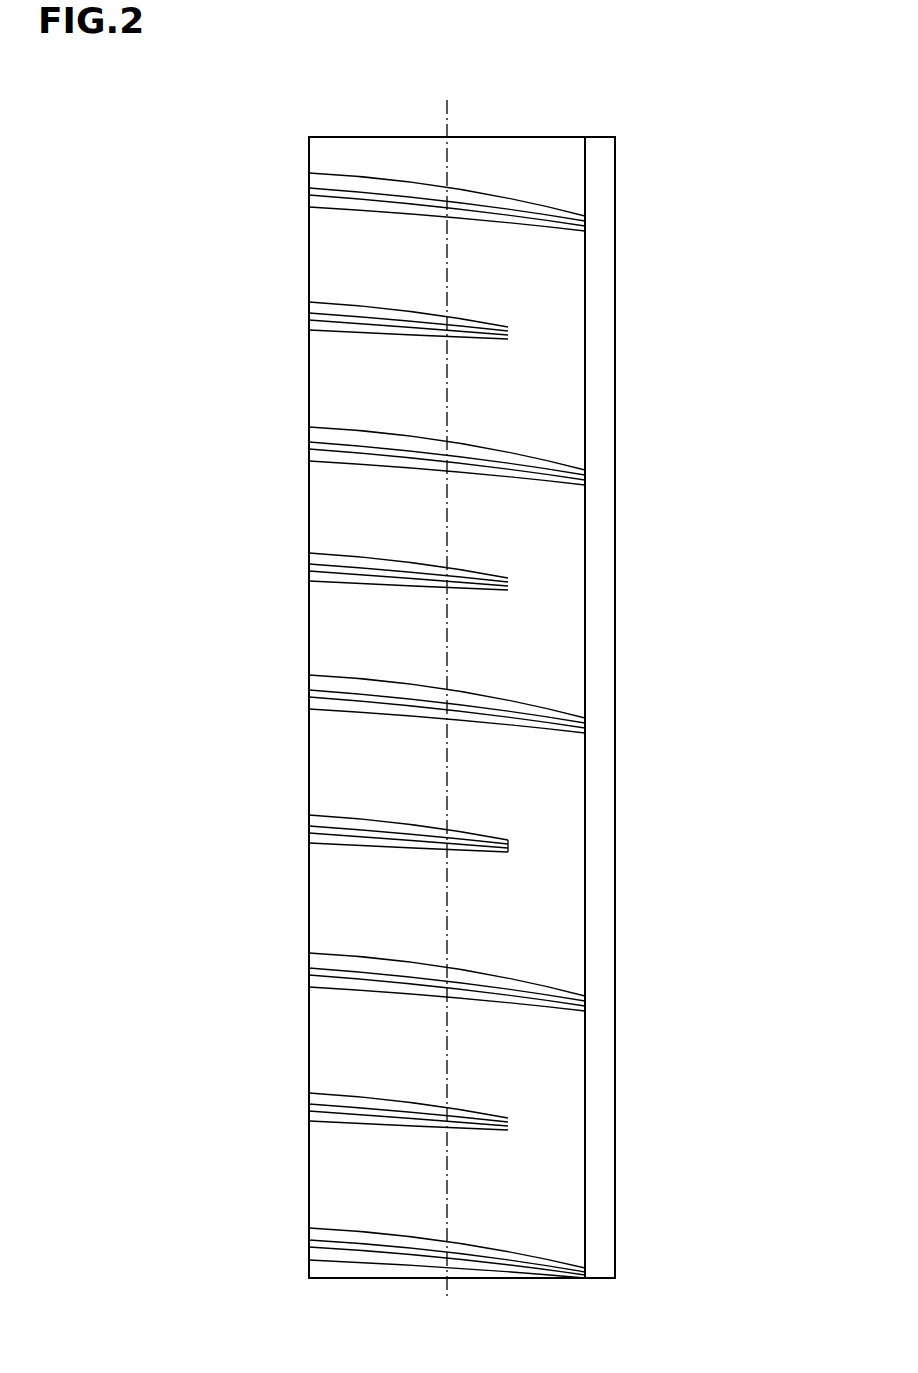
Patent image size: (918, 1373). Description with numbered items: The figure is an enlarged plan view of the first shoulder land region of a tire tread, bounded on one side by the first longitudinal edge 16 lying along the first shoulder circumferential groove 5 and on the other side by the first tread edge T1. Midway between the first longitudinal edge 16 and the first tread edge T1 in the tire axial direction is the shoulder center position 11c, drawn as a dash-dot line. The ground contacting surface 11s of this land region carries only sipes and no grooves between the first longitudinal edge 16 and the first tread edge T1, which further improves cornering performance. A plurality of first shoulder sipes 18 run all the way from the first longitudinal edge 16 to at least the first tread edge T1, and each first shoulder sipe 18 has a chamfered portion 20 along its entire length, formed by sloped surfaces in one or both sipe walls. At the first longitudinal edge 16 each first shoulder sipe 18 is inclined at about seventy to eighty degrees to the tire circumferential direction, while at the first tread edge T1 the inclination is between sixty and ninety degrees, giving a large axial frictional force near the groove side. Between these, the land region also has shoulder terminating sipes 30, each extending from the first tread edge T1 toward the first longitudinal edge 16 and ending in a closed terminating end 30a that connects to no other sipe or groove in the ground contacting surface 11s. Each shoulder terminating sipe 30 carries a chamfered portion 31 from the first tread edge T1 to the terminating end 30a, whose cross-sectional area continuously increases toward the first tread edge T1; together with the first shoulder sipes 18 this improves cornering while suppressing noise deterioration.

The first shoulder circumferential groove 5 is at (593, 177).
The shoulder center position 11c is at (447, 368).
The ground contacting surface 11s is at (552, 308).
The first longitudinal edge 16 is at (587, 253).
The first tread edge T1 is at (308, 160).
The chamfered portion 20 is at (362, 198).
The first shoulder sipe 18 is at (405, 450).
The chamfered portion 31 is at (350, 832).
The shoulder terminating sipe 30 is at (387, 575).
The terminating end 30a is at (507, 850).